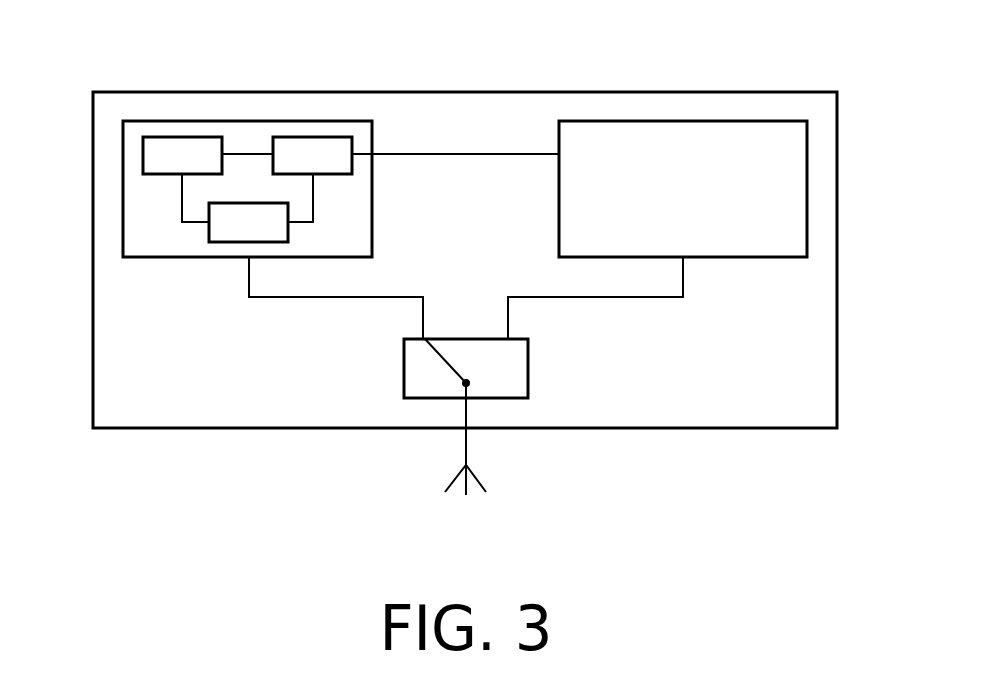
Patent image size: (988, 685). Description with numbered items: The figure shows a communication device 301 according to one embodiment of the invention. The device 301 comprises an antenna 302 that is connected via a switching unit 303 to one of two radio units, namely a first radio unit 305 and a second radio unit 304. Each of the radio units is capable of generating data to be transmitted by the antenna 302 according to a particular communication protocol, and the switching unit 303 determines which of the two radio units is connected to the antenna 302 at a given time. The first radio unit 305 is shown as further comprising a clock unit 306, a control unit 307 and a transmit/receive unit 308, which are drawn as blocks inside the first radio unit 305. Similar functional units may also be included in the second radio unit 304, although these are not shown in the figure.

The communication device 301 is at (130, 430).
The antenna 302 is at (466, 495).
The switching unit 303 is at (528, 360).
The second radio unit 304 is at (807, 140).
The first radio unit 305 is at (123, 140).
The clock unit 306 is at (182, 137).
The control unit 307 is at (313, 137).
The transmit/receive unit 308 is at (218, 243).